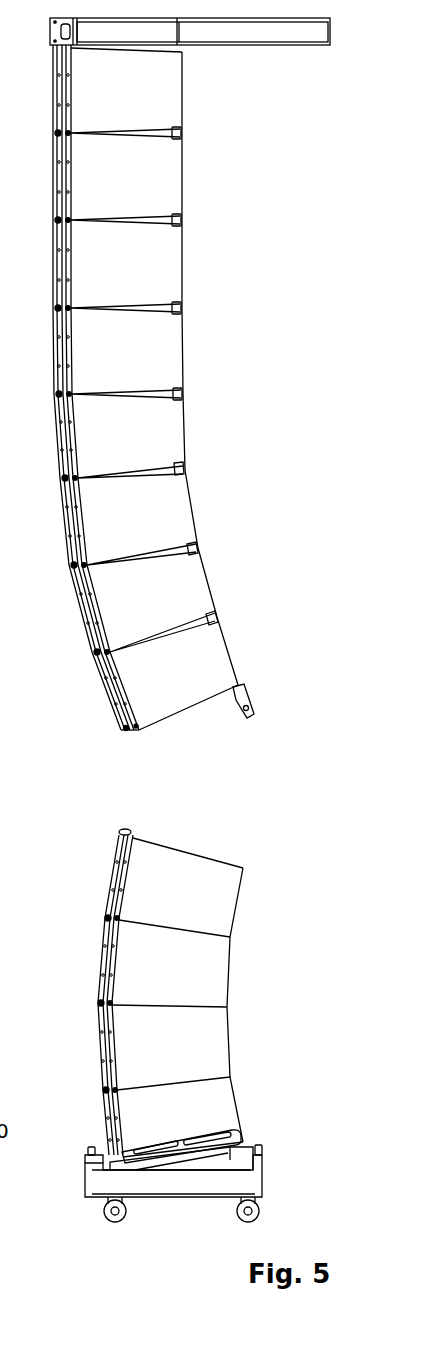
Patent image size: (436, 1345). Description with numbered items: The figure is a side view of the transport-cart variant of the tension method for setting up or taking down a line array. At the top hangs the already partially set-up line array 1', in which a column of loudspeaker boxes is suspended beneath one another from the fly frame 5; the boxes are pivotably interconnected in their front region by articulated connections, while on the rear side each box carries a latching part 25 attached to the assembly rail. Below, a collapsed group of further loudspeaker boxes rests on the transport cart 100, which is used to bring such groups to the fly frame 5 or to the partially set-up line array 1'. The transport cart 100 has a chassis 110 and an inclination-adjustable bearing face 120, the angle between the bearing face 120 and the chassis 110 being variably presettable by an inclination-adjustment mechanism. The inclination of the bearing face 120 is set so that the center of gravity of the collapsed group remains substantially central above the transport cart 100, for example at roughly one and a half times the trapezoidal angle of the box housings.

The partially set-up line array 1' is at (173, 374).
The fly frame 5 is at (300, 38).
The latching part 25 is at (183, 137).
The transport cart 100 is at (268, 1151).
The chassis 110 is at (197, 1185).
The bearing face 120 is at (113, 1158).